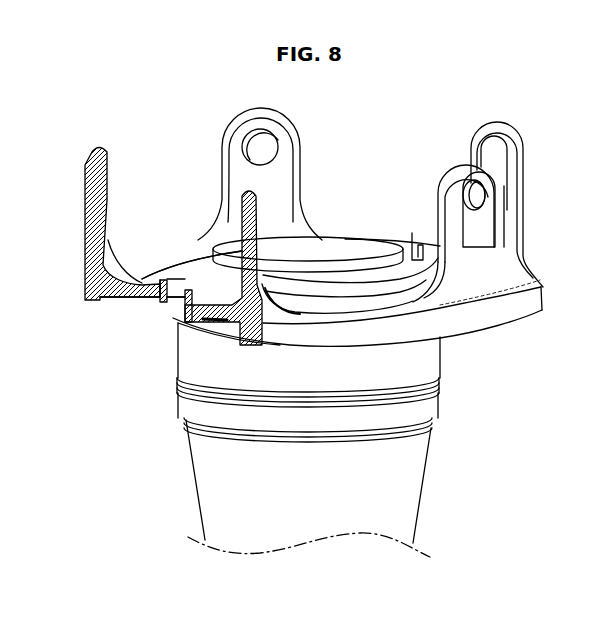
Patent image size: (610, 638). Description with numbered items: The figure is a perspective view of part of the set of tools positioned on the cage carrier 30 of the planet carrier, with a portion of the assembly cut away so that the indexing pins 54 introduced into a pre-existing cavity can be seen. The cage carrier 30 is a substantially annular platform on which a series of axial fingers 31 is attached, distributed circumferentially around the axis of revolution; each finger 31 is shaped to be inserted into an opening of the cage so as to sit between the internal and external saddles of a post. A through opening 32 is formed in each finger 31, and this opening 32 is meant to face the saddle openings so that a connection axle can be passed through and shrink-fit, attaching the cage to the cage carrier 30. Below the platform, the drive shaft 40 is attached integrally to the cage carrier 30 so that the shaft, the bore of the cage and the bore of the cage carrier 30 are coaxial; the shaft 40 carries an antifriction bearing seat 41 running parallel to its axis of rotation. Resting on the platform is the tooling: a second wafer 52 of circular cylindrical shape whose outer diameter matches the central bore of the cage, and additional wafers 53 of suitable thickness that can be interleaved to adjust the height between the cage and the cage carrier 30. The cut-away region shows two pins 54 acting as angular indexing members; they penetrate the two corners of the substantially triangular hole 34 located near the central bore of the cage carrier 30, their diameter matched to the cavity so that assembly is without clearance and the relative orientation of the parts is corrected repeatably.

The cage carrier 30 is at (518, 311).
The axial finger 31 is at (489, 263).
The through opening 32 is at (488, 199).
The triangular hole 34 is at (169, 305).
The drive shaft 40 is at (405, 500).
The antifriction bearing seat 41 is at (430, 400).
The second wafer 52 is at (340, 255).
The additional wafer 53 is at (187, 258).
The pin 54 is at (160, 298).